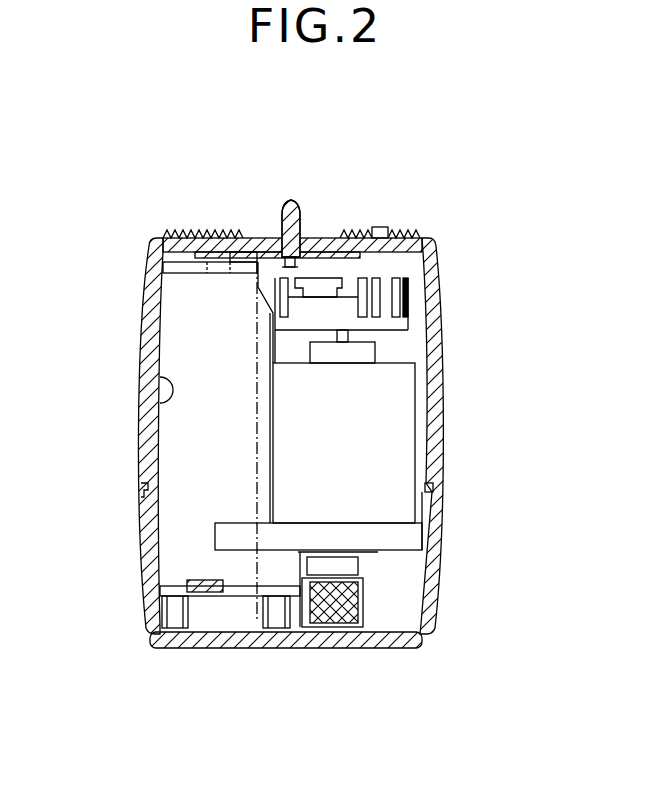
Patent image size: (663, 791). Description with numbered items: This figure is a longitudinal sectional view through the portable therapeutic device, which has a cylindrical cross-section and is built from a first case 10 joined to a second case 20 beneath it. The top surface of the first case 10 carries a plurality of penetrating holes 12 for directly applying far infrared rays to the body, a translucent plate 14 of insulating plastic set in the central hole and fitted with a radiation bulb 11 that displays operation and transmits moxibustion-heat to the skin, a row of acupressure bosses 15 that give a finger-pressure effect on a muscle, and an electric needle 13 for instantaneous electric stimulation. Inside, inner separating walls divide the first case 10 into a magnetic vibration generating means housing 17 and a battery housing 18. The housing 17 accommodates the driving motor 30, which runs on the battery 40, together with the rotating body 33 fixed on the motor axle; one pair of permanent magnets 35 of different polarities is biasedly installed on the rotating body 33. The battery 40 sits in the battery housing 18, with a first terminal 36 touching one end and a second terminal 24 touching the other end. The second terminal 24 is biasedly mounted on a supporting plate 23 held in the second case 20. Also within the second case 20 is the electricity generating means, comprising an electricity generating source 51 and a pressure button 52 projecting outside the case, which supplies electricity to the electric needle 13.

The first case 10 is at (446, 405).
The radiation bulb 11 is at (292, 205).
The penetrating holes 12 is at (407, 235).
The electric needle 13 is at (382, 227).
The translucent plate 14 is at (260, 237).
The acupressure bosses 15 is at (347, 232).
The magnetic vibration generating means housing 17 is at (423, 347).
The battery housing 18 is at (160, 380).
The second case 20 is at (443, 553).
The supporting plate 23 is at (160, 586).
The second terminal 24 is at (205, 580).
The driving motor 30 is at (410, 452).
The rotating body 33 is at (405, 297).
The permanent magnets 35 is at (328, 280).
The first terminal 36 is at (192, 254).
The battery 40 is at (163, 263).
The electricity generating source 51 is at (363, 607).
The pressure button 52 is at (340, 615).